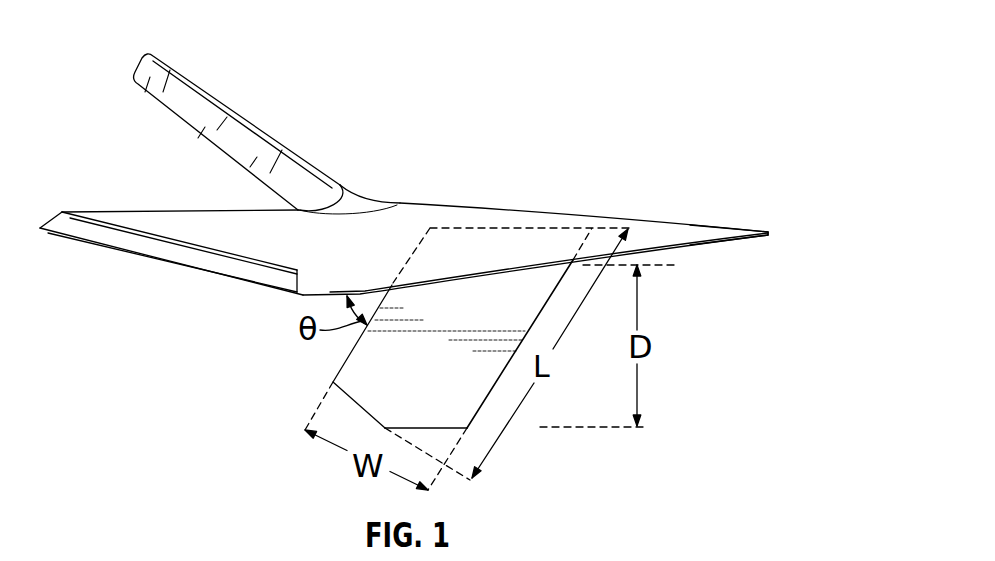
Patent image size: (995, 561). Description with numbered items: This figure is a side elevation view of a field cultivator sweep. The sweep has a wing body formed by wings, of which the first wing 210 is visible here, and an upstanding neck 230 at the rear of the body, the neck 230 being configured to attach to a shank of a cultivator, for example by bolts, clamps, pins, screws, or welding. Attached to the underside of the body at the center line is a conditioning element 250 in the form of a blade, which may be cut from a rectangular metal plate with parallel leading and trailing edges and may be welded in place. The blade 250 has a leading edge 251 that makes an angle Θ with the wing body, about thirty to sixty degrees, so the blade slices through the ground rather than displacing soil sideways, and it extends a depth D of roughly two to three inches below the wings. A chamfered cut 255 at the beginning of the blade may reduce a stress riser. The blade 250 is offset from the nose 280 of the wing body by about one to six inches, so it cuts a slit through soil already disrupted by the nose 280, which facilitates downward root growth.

The first wing 210 is at (558, 197).
The upstanding neck 230 is at (265, 95).
The conditioning element 250 is at (429, 375).
The leading edge 251 is at (477, 416).
The chamfered cut 255 is at (445, 428).
The nose 280 is at (773, 202).